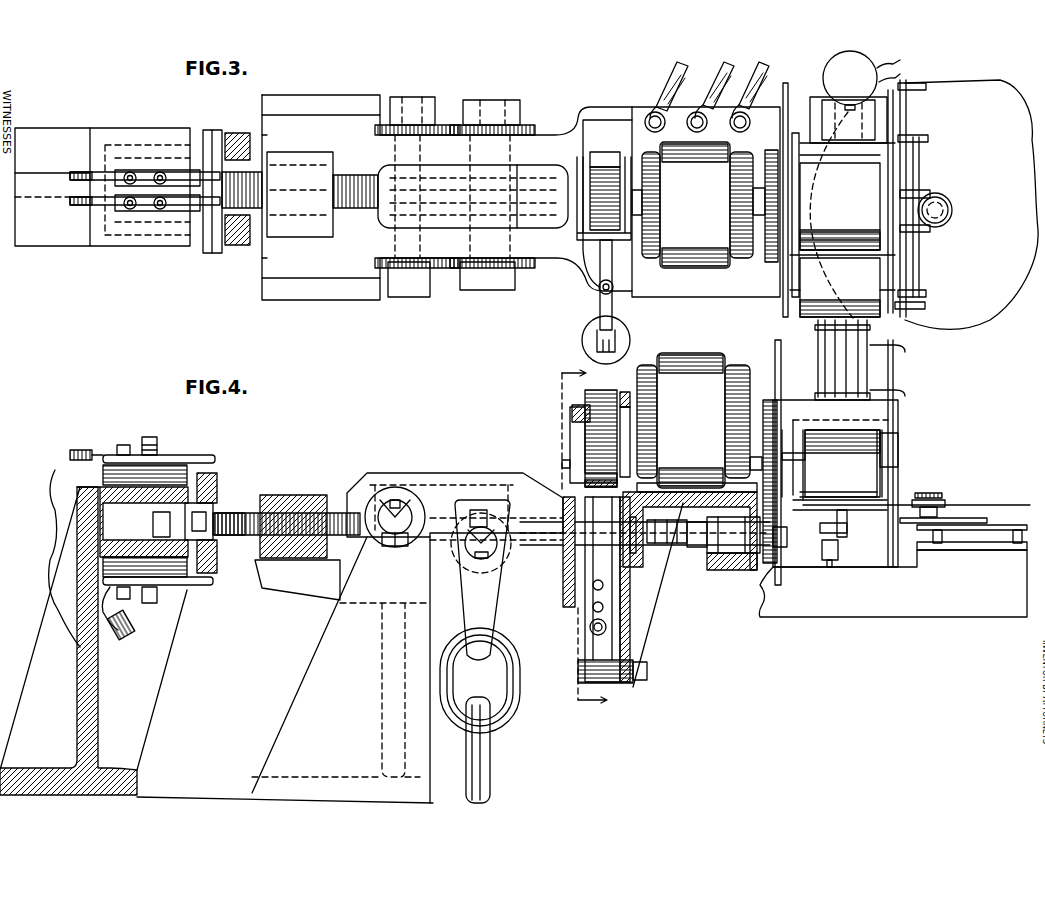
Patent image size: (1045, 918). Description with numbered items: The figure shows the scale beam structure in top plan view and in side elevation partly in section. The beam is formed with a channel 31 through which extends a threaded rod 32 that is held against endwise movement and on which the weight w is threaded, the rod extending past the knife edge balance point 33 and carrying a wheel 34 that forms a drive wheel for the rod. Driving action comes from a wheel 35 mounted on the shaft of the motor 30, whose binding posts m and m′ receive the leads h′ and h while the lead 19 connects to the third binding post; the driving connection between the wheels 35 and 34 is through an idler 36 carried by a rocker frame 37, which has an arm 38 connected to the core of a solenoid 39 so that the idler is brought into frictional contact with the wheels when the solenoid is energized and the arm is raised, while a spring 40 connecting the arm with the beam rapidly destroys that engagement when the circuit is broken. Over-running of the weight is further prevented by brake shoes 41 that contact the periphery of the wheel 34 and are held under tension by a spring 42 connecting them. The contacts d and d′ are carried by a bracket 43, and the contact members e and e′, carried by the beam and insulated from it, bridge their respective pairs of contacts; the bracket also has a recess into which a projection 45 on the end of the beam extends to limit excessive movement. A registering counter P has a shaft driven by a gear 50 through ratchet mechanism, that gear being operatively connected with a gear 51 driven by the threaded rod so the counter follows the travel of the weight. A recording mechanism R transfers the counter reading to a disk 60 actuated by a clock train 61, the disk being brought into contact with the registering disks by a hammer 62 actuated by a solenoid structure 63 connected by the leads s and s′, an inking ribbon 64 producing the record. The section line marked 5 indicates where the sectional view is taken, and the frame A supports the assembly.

In FIG. 3, the bracket 43 is at (145, 135).
In FIG. 4, the bracket 43 is at (100, 698).
In FIG. 3, the contact d is at (215, 210).
In FIG. 3, the contact d′ is at (212, 130).
In FIG. 4, the contact d′ is at (180, 460).
In FIG. 3, the contact member e is at (234, 133).
In FIG. 4, the contact member e is at (218, 480).
In FIG. 4, the contact member e′ is at (218, 573).
In FIG. 4, the projection 45 is at (168, 522).
In FIG. 3, the weight w is at (277, 194).
In FIG. 4, the weight w is at (300, 512).
In FIG. 3, the threaded rod 32 is at (343, 185).
In FIG. 4, the threaded rod 32 is at (345, 550).
In FIG. 3, the channel 31 is at (365, 222).
In FIG. 4, the channel 31 is at (347, 490).
In FIG. 3, the knife edge balance point 33 is at (410, 100).
In FIG. 4, the knife edge balance point 33 is at (392, 547).
In FIG. 3, the frame A is at (560, 134).
In FIG. 4, the frame A is at (305, 585).
In FIG. 3, the idler 36 is at (605, 153).
In FIG. 4, the idler 36 is at (597, 450).
In FIG. 3, the wheel 35 is at (605, 198).
In FIG. 4, the wheel 35 is at (597, 396).
In FIG. 3, the rocker frame 37 is at (588, 250).
In FIG. 4, the rocker frame 37 is at (572, 410).
In FIG. 3, the spring 40 is at (598, 289).
In FIG. 3, the arm 38 is at (613, 297).
In FIG. 3, the solenoid 39 is at (628, 340).
In FIG. 3, the binding post m is at (648, 112).
In FIG. 3, the binding post m′ is at (687, 111).
In FIG. 3, the lead h′ is at (664, 70).
In FIG. 3, the lead h is at (714, 79).
In FIG. 3, the lead 19 is at (775, 62).
In FIG. 3, the motor 30 is at (698, 205).
In FIG. 4, the motor 30 is at (699, 422).
In FIG. 3, the gear 50 is at (766, 262).
In FIG. 4, the gear 50 is at (768, 400).
In FIG. 3, the solenoid structure 63 is at (835, 184).
In FIG. 4, the solenoid structure 63 is at (818, 362).
In FIG. 3, the lead s is at (893, 59).
In FIG. 4, the lead s is at (895, 352).
In FIG. 3, the lead s′ is at (895, 73).
In FIG. 4, the lead s′ is at (897, 394).
In FIG. 3, the registering counter P is at (847, 215).
In FIG. 4, the registering counter P is at (898, 442).
In FIG. 3, the inking ribbon 64 is at (842, 286).
In FIG. 4, the inking ribbon 64 is at (842, 463).
In FIG. 3, the recording mechanism R is at (924, 186).
In FIG. 4, the recording mechanism R is at (950, 479).
In FIG. 3, the disk 60 is at (971, 204).
In FIG. 4, the disk 60 is at (975, 505).
In FIG. 4, the clock train 61 is at (945, 530).
In FIG. 4, the hammer 62 is at (848, 527).
In FIG. 4, the wheel 34 is at (587, 575).
In FIG. 4, the brake shoes 41 is at (592, 607).
In FIG. 4, the spring 42 is at (590, 627).
In FIG. 4, the section line 5 is at (573, 530).
In FIG. 4, the gear 51 is at (760, 560).